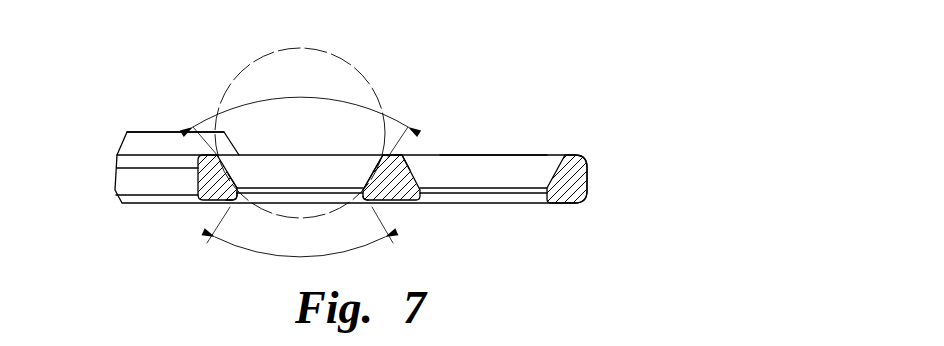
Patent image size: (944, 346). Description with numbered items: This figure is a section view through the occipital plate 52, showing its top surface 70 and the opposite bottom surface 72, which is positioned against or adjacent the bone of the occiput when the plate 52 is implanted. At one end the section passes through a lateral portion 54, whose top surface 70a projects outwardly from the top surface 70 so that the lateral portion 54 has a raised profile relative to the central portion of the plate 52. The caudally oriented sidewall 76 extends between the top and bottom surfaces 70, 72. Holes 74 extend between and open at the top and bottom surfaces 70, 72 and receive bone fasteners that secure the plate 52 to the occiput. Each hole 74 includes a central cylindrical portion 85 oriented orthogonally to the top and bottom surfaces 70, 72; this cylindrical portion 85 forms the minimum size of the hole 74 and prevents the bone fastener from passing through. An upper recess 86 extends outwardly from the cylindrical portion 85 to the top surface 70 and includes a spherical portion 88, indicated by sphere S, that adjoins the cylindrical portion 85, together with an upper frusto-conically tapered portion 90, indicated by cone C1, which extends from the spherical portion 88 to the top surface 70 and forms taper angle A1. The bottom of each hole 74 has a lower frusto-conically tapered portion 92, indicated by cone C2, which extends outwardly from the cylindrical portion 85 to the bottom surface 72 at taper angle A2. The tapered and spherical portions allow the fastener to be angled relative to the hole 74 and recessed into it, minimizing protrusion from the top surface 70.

The plate 52 is at (515, 114).
The lateral portion 54 is at (117, 145).
The top surface 70 is at (537, 155).
The top surface 70a is at (153, 132).
The bottom surface 72 is at (398, 202).
The hole 74 is at (288, 170).
The caudally oriented sidewall 76 is at (196, 189).
The central cylindrical portion 85 is at (403, 155).
The upper recess 86 is at (257, 172).
The spherical portion 88 is at (364, 166).
The upper frusto-conically tapered portion 90 is at (193, 179).
The lower frusto-conically tapered portion 92 is at (234, 202).
The sphere S is at (335, 55).
The taper angle A1 is at (288, 97).
The taper angle A2 is at (262, 257).
The cone C1 is at (400, 152).
The cone C2 is at (384, 228).